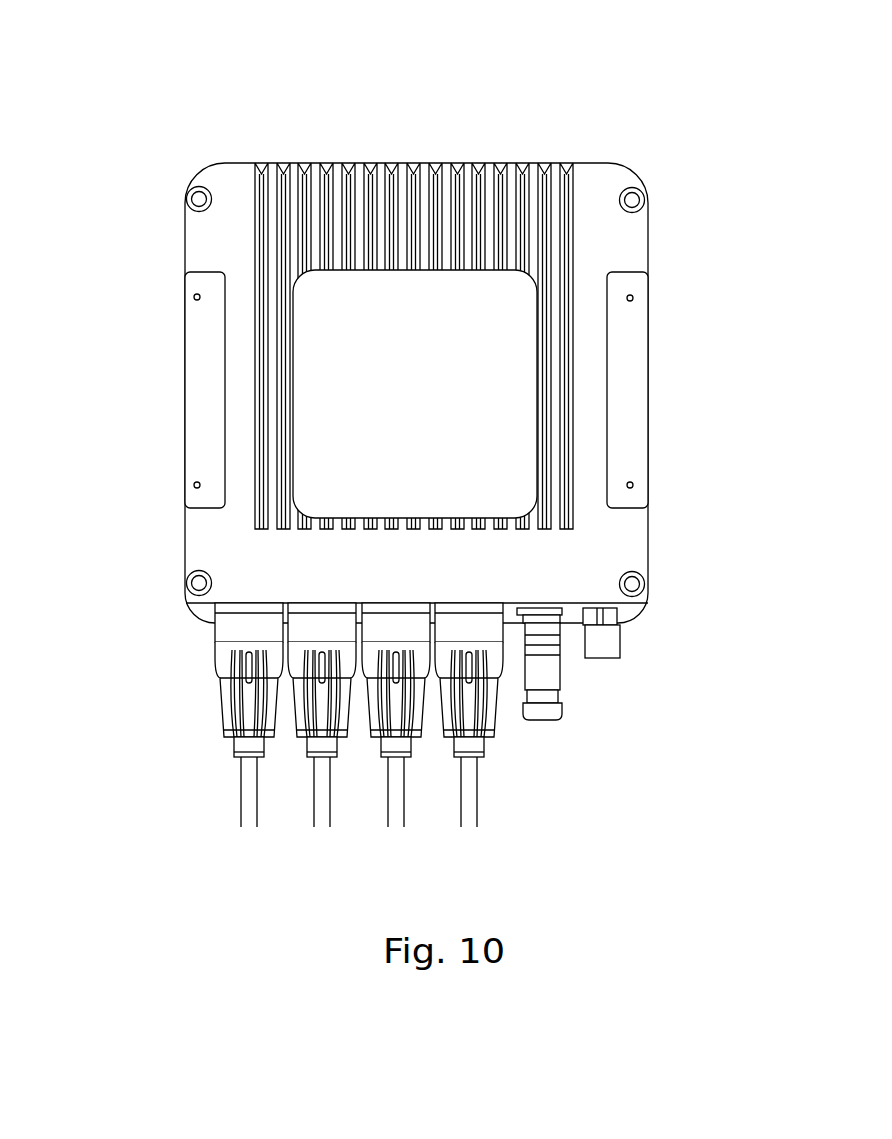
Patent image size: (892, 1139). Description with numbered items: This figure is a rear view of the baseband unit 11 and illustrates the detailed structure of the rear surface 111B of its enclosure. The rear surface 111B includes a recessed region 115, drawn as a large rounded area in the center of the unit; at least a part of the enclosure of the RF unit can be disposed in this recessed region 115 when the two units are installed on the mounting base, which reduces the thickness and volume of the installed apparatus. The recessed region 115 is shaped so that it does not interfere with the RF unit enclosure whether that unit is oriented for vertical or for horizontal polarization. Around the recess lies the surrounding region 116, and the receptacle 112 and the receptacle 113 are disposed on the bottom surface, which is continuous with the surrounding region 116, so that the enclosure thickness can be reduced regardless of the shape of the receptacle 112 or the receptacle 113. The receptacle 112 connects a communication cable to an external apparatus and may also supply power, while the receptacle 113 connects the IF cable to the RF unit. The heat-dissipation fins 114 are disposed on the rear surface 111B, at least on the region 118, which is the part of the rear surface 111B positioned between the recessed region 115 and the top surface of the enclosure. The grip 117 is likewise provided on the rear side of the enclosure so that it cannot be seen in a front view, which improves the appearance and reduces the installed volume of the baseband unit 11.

The baseband unit 11 is at (560, 94).
The rear surface 111B is at (615, 248).
The receptacle 112 is at (206, 607).
The receptacle 113 is at (604, 660).
The heat-dissipation fins 114 is at (410, 163).
The recessed region 115 is at (436, 390).
The surrounding region 116 is at (436, 583).
The grip 117 is at (190, 345).
The region 118 is at (592, 182).